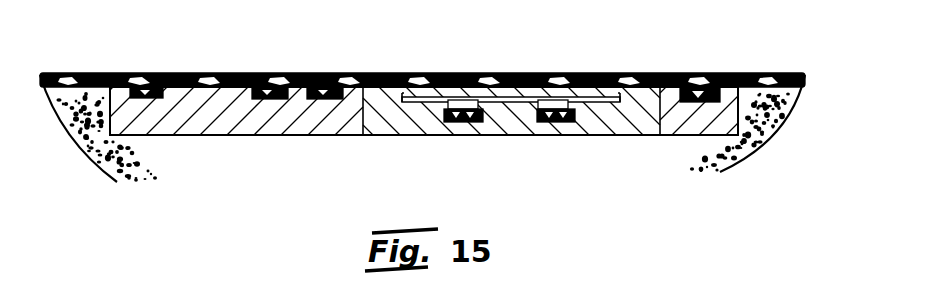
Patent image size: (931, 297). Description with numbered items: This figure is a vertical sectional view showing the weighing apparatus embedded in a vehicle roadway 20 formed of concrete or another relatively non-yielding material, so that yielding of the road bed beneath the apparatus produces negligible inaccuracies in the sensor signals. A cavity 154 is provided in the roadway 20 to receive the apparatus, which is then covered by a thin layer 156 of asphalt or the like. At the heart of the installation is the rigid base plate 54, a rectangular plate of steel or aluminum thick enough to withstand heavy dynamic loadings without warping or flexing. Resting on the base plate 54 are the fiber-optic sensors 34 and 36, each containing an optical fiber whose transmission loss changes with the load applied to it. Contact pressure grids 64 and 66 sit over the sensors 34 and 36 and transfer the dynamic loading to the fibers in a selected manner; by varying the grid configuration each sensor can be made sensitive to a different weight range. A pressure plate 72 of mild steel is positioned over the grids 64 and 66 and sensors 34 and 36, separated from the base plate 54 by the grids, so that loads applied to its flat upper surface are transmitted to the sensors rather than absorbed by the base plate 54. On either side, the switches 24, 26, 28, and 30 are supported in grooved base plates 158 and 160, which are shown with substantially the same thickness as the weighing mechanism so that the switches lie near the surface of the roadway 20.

The roadway 20 is at (88, 150).
The switch 24 is at (153, 97).
The switch 26 is at (272, 99).
The switch 28 is at (320, 99).
The switch 30 is at (698, 73).
The fiber-optic sensor 34 is at (467, 121).
The fiber-optic sensor 36 is at (563, 122).
The base plate 54 is at (416, 125).
The contact pressure grid 64 is at (462, 97).
The contact pressure grid 66 is at (552, 97).
The pressure plate 72 is at (420, 96).
The cavity 154 is at (303, 133).
The thin layer 156 is at (278, 73).
The grooved base plate 158 is at (193, 73).
The grooved base plate 160 is at (683, 125).